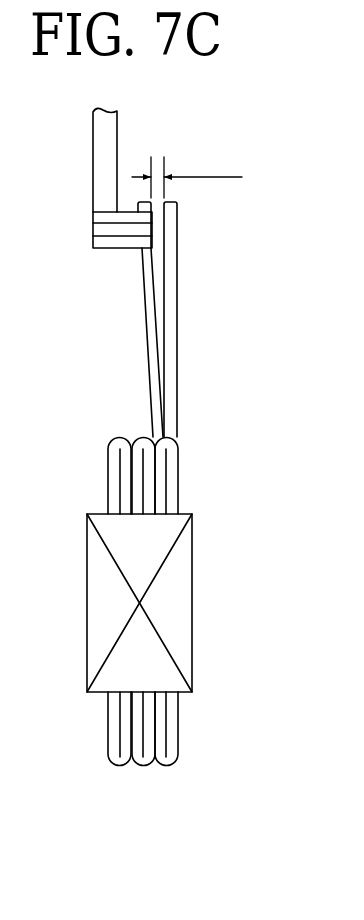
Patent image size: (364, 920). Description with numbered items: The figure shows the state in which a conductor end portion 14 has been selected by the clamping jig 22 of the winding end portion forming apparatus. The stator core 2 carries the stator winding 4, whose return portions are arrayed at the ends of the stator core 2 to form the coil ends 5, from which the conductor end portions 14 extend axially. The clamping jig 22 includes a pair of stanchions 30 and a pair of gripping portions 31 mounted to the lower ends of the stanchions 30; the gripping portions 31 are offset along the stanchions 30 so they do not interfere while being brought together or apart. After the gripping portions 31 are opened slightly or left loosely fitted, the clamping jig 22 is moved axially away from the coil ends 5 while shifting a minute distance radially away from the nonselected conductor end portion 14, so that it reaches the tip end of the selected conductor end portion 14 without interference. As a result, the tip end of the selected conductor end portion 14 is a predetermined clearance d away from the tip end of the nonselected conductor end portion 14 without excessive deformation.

The stator core 2 is at (97, 580).
The stator winding 4 is at (100, 480).
The coil ends 5 is at (172, 470).
The conductor end portion 14 is at (155, 290).
The clamping jig 22 is at (86, 149).
The stanchions 30 is at (103, 191).
The gripping portions 31 is at (127, 220).
The clearance d is at (187, 173).